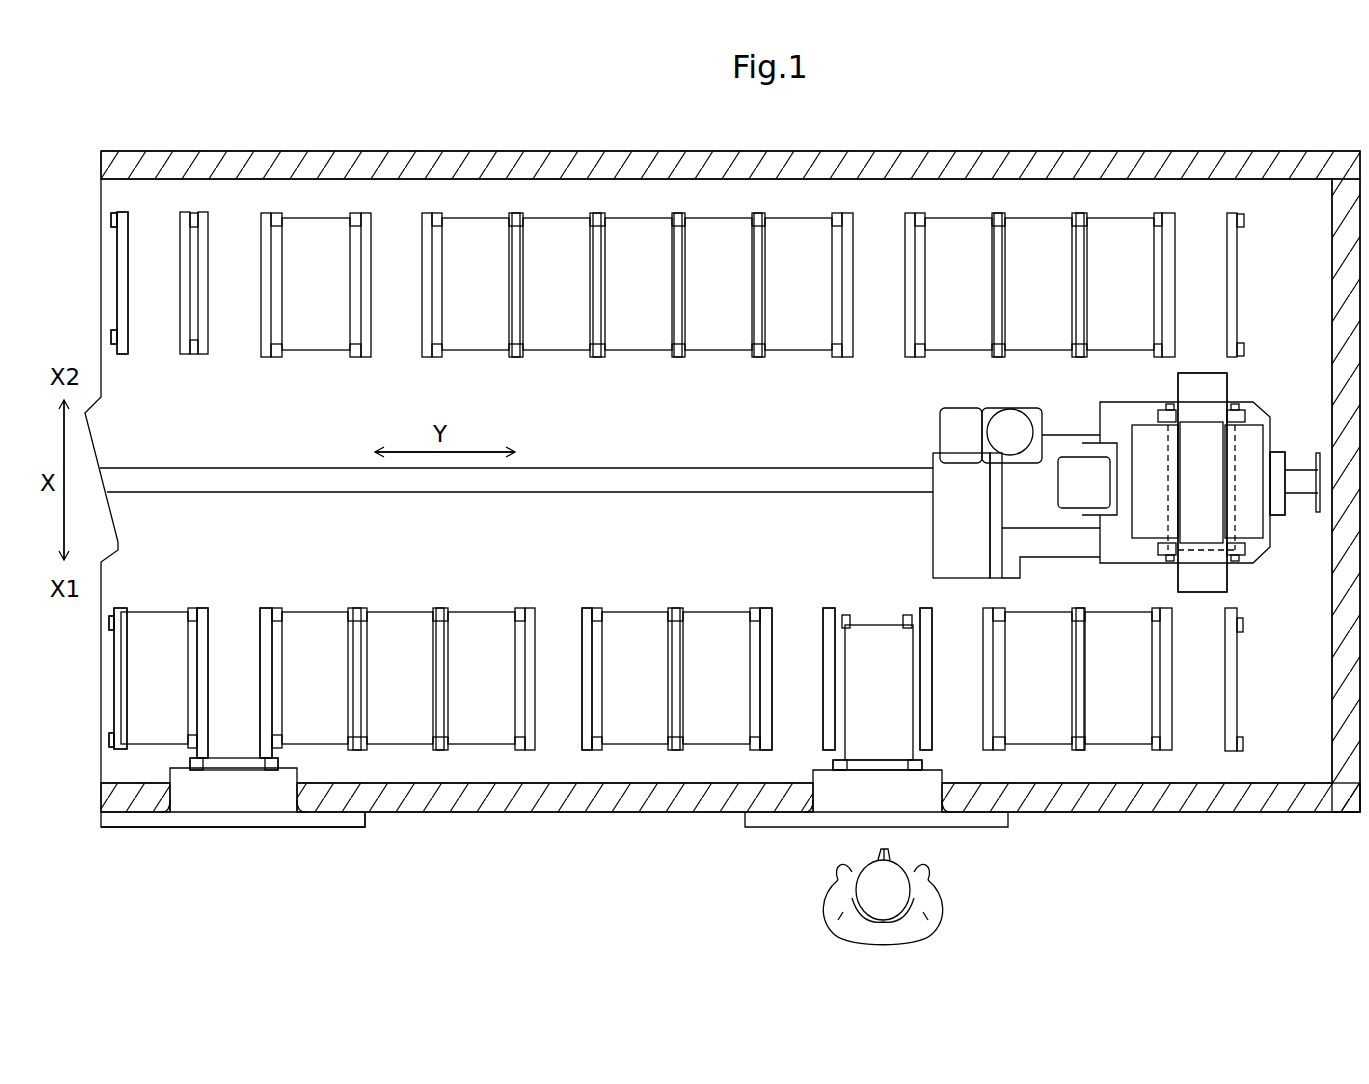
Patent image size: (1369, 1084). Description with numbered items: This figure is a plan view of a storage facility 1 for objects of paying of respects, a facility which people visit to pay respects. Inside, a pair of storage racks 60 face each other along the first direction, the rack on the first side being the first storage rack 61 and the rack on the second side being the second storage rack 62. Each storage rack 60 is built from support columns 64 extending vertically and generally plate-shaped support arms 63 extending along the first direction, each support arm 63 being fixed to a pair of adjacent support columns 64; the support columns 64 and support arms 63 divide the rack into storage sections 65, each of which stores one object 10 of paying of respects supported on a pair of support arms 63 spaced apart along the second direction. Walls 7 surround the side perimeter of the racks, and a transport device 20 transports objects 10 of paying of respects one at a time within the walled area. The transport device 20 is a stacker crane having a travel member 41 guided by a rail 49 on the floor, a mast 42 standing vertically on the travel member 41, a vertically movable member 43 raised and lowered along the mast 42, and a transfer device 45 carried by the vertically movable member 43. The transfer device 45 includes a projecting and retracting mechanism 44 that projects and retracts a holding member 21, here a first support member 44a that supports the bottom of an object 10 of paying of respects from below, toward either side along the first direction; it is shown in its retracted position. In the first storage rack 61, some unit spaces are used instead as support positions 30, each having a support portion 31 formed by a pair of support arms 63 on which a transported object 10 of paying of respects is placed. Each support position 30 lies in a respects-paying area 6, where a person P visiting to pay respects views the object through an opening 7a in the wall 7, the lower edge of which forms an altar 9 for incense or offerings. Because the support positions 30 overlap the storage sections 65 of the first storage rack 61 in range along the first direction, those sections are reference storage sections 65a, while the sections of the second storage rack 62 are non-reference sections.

The storage facility 1 is at (722, 497).
The respects-paying area 6 is at (555, 854).
The wall 7 is at (1208, 806).
The opening 7a is at (172, 800).
The altar 9 is at (335, 830).
The object of paying of respects 10 is at (718, 330).
The transport device 20 is at (1130, 489).
The holding member 21 is at (1277, 483).
The support position 30 is at (240, 745).
The support portion 31 is at (203, 607).
The travel member 41 is at (1070, 443).
The mast 42 is at (1065, 474).
The vertically movable member 43 is at (1150, 528).
The projecting and retracting mechanism 44 is at (1232, 445).
The first support member 44a is at (1203, 528).
The transfer device 45 is at (1202, 482).
The rail 49 is at (675, 490).
The storage rack 60 is at (84, 500).
The first storage rack 61 is at (106, 680).
The second storage rack 62 is at (106, 298).
The support arm 63 is at (362, 348).
The support column 64 is at (915, 222).
The storage section 65 is at (316, 327).
The reference storage section 65a is at (628, 632).
The person P is at (945, 917).